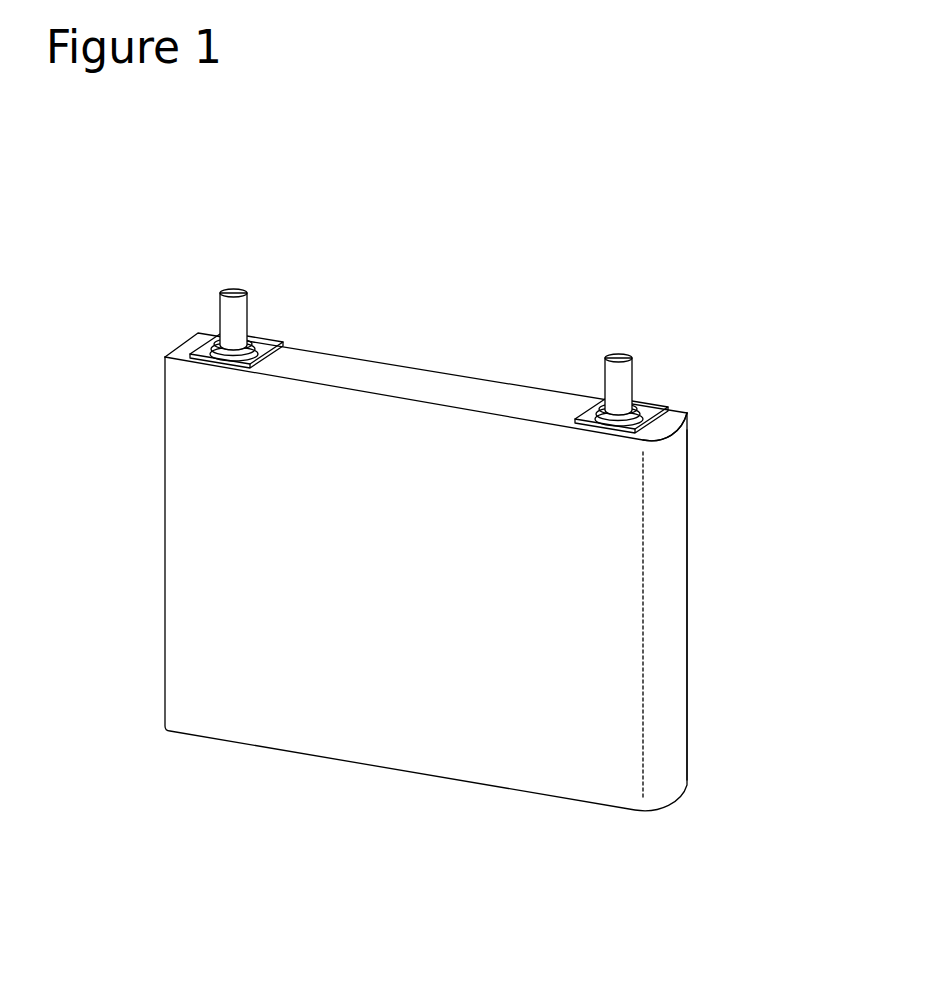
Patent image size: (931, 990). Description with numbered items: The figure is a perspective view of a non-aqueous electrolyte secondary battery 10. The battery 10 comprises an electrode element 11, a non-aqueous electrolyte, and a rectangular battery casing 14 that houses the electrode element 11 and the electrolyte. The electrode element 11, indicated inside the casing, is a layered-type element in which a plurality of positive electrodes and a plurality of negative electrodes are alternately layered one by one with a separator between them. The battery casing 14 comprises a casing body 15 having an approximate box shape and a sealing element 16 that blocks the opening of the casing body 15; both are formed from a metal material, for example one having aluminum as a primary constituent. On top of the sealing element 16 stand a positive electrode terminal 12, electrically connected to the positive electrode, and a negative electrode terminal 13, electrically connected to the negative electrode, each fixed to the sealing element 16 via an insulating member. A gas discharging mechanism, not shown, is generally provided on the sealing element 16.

The non-aqueous electrolyte secondary battery 10 is at (493, 515).
The electrode element 11 is at (588, 612).
The positive electrode terminal 12 is at (241, 291).
The negative electrode terminal 13 is at (660, 365).
The battery casing 14 is at (728, 596).
The casing body 15 is at (772, 448).
The sealing element 16 is at (690, 417).